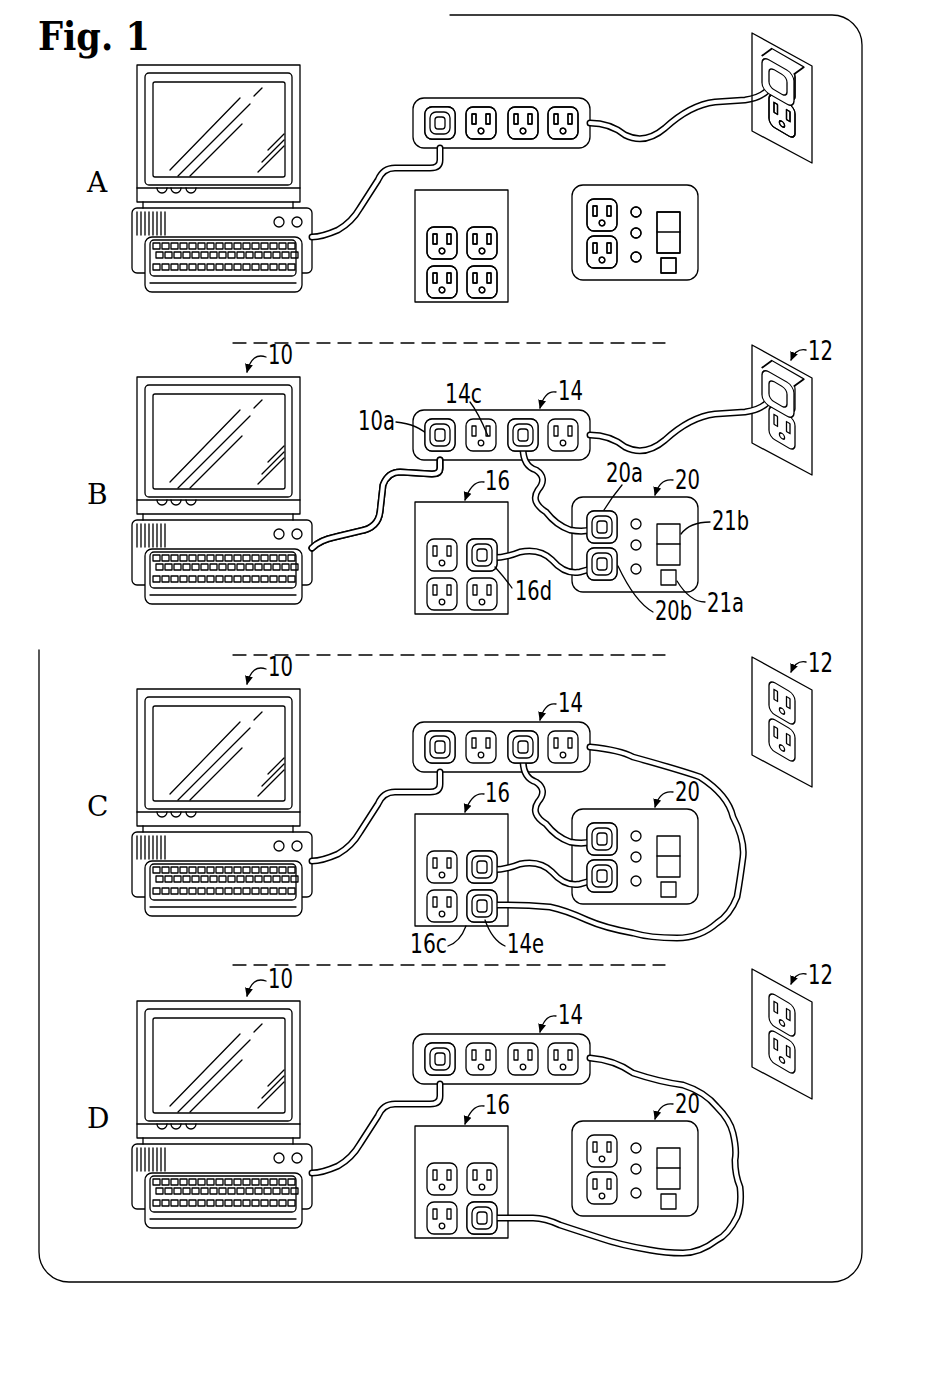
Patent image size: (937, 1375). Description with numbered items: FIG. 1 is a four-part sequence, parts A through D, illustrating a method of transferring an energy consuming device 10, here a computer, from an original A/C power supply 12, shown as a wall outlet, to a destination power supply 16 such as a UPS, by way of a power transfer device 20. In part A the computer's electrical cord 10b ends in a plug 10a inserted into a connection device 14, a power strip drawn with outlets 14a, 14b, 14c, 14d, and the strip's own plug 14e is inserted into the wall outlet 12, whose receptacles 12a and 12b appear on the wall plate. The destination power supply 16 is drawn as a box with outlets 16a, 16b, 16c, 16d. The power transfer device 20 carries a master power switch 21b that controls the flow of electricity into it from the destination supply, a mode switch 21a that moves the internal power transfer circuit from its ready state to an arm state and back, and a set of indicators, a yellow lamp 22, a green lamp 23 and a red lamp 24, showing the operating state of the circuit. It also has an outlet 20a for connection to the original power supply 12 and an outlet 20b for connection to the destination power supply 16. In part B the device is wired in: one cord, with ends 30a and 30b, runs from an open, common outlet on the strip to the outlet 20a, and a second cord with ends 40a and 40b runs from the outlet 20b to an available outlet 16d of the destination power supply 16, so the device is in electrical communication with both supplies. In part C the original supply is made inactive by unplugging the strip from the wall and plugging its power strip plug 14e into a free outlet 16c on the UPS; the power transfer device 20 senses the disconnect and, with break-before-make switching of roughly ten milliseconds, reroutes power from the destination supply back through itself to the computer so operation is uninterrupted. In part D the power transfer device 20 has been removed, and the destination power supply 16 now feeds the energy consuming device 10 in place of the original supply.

The energy consuming device 10 is at (247, 60).
The plug 10a is at (430, 125).
The electrical cord 10b is at (325, 540).
The original A/C power supply 12 is at (791, 48).
The upper receptacle of wall outlet 12a is at (796, 80).
The lower receptacle of wall outlet 12b is at (785, 135).
The connection device 14 is at (540, 96).
The first power strip outlet 14a is at (441, 108).
The second power strip outlet 14b is at (481, 107).
The third power strip outlet 14c is at (521, 139).
The fourth power strip outlet 14d is at (561, 139).
The power strip plug 14e is at (770, 75).
The destination power supply 16 is at (465, 188).
The first box outlet 16a is at (425, 243).
The second box outlet 16b is at (425, 281).
The outlet 16c is at (498, 281).
The outlet 16d is at (498, 243).
The power transfer device 20 is at (655, 183).
The outlet 20a is at (586, 211).
The outlet 20b is at (600, 268).
The mode switch 21a is at (677, 269).
The master power switch 21b is at (681, 222).
The yellow lamp 22 is at (636, 206).
The green lamp 23 is at (642, 233).
The red lamp 24 is at (637, 263).
The cord end 30a is at (522, 428).
The cord end 30b is at (598, 518).
The cord end 40a is at (492, 550).
The cord end 40b is at (603, 580).